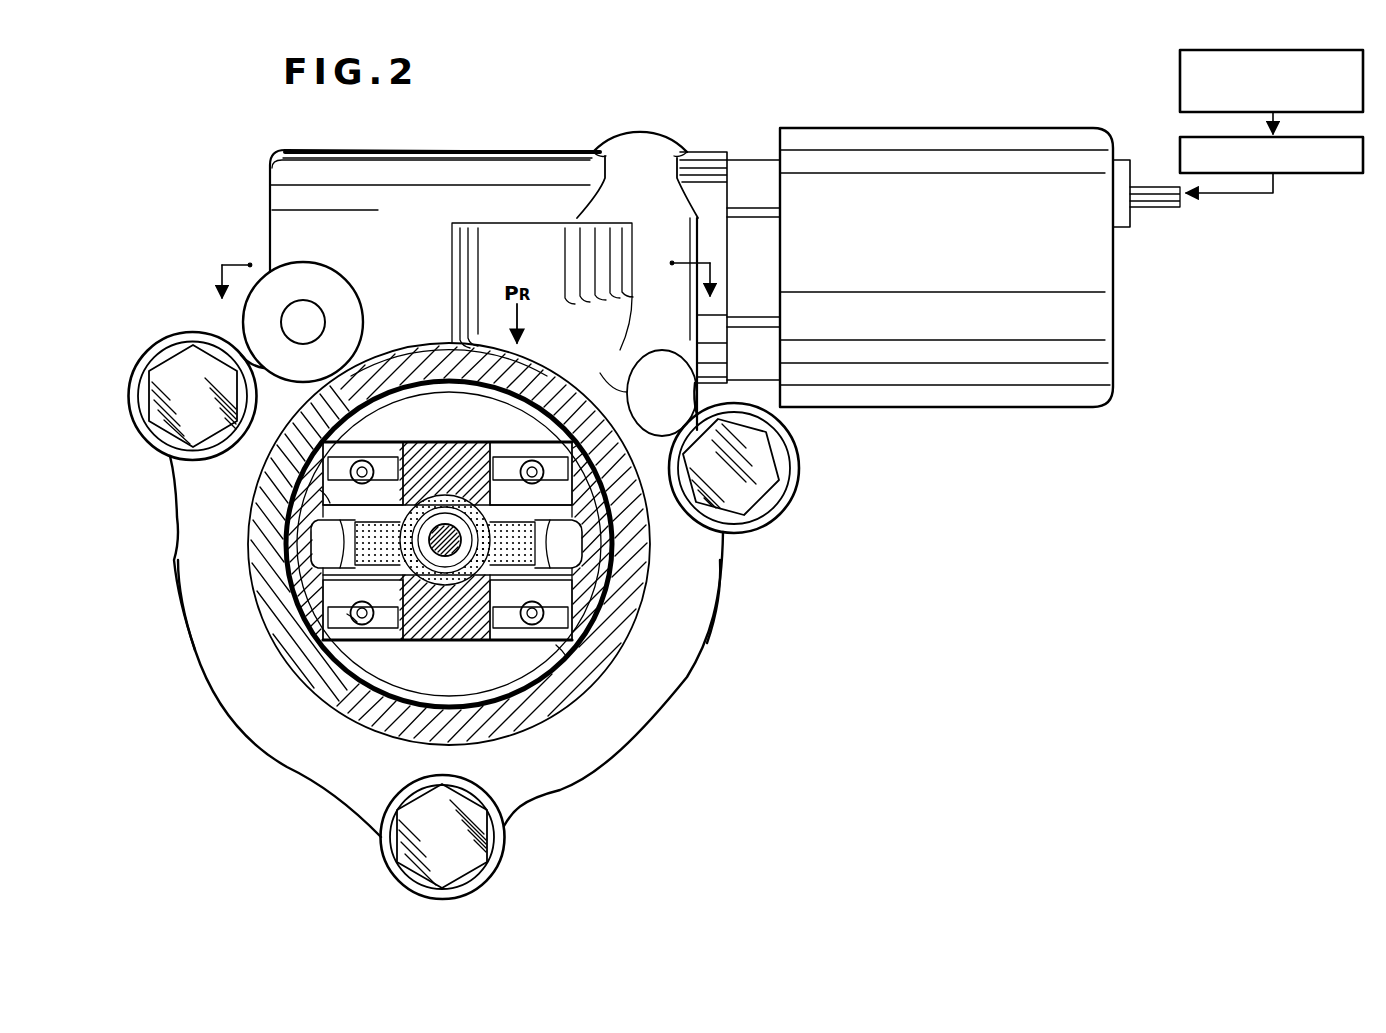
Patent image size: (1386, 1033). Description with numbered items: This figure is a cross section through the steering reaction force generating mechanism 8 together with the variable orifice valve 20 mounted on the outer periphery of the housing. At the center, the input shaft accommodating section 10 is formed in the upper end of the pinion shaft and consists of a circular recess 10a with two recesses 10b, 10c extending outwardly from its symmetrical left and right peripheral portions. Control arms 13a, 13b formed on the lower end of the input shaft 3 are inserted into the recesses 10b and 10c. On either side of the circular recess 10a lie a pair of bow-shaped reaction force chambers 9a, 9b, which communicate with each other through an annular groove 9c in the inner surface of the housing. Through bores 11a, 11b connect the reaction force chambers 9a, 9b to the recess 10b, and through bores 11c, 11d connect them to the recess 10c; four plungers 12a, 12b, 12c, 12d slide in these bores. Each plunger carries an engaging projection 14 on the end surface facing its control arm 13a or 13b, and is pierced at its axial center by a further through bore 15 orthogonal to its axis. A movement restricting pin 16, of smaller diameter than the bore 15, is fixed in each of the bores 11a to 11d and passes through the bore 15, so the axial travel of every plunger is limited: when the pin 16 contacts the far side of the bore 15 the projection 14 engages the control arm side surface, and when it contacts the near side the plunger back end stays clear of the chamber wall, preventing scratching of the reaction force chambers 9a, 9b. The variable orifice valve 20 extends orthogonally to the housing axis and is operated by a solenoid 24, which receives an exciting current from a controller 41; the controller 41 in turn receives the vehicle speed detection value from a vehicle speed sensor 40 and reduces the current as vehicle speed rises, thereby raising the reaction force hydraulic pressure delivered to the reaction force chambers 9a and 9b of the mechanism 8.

The input shaft 3 is at (463, 265).
The steering reaction force generating mechanism 8 is at (273, 618).
The reaction force chamber 9a is at (413, 397).
The reaction force chamber 9b is at (505, 720).
The annular groove 9c is at (253, 553).
The input shaft accommodating section 10 is at (597, 590).
The circular recess 10a is at (455, 598).
The recess 10b is at (305, 540).
The recess 10c is at (577, 557).
The through bore 11a is at (385, 446).
The through bore 11b is at (375, 625).
The through bore 11c is at (509, 446).
The through bore 11d is at (580, 615).
The plunger 12a is at (327, 495).
The plunger 12b is at (353, 617).
The plunger 12c is at (628, 428).
The plunger 12d is at (562, 650).
The control arm 13a is at (285, 575).
The control arm 13b is at (607, 575).
The engaging projection 14 is at (313, 513).
The through bore 15 is at (280, 478).
The movement restricting pin 16 is at (352, 462).
The variable orifice valve 20 is at (546, 140).
The solenoid 24 is at (973, 128).
The vehicle speed sensor 40 is at (1180, 80).
The controller 41 is at (1180, 150).